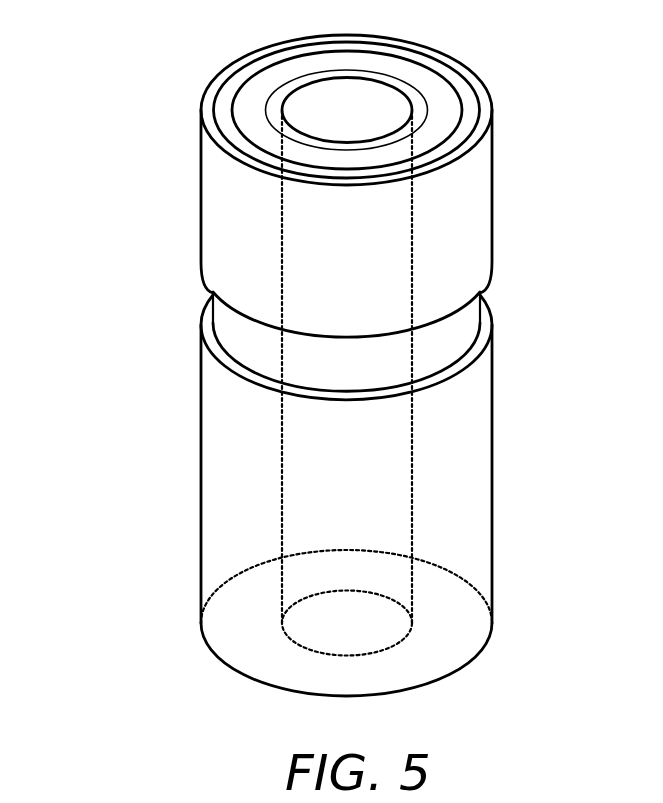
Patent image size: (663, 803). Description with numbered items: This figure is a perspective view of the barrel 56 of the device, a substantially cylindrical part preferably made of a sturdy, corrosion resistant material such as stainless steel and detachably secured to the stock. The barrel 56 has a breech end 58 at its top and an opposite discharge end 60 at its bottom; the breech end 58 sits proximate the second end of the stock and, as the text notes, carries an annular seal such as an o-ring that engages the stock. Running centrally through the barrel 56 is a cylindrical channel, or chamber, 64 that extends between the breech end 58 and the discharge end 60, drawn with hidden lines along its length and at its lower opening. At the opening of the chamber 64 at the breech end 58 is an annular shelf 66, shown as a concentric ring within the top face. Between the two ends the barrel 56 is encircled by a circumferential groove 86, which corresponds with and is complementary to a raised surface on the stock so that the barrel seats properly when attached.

The barrel 56 is at (150, 364).
The breech end 58 is at (493, 110).
The discharge end 60 is at (476, 660).
The cylindrical channel 64 is at (352, 104).
The annular shelf 66 is at (296, 82).
The circumferential groove 86 is at (487, 328).